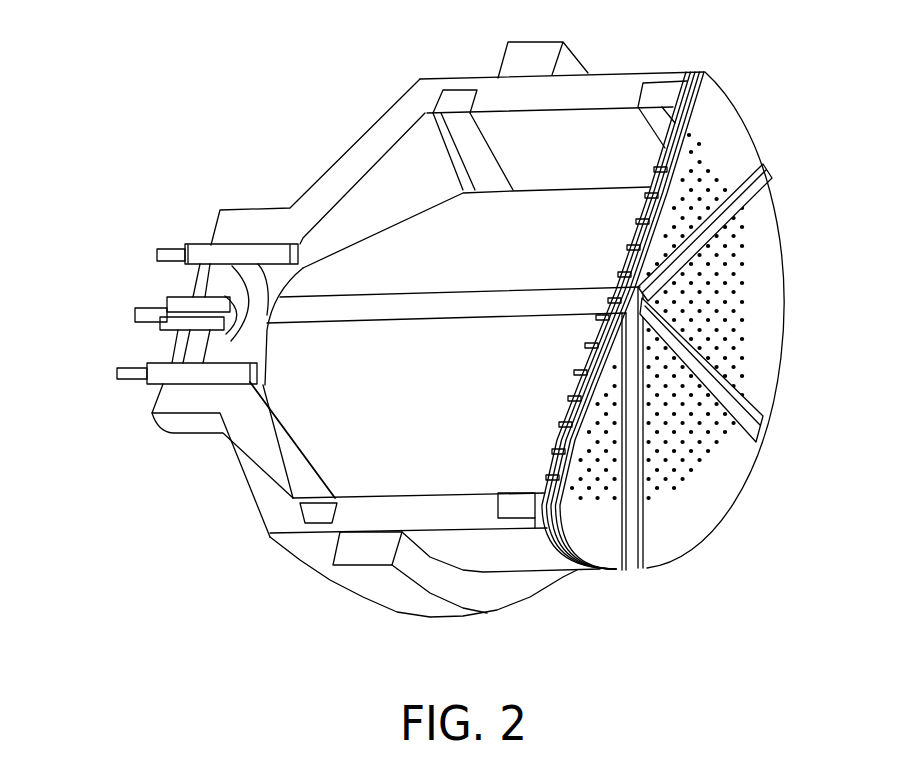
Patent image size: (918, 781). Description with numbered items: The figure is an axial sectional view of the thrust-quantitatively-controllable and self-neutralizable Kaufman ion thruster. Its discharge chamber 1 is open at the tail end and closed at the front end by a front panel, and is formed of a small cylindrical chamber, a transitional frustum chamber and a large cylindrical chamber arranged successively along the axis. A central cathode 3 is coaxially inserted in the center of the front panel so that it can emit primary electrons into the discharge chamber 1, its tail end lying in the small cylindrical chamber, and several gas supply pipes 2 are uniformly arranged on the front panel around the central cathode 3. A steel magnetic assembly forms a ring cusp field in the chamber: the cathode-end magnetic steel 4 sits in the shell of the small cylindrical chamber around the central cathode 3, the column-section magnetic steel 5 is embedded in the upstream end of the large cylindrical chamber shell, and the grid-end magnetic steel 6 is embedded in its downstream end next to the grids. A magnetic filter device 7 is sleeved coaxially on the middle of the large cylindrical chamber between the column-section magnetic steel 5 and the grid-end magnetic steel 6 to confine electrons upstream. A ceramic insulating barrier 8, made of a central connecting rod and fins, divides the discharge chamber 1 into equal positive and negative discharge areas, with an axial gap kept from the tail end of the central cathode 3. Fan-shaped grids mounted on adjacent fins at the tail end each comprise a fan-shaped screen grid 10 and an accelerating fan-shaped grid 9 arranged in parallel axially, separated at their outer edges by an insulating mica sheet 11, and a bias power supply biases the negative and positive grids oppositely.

The discharge chamber 1 is at (387, 130).
The gas supply pipes 2 is at (202, 253).
The central cathode 3 is at (177, 315).
The cathode-end magnetic steel 4 is at (255, 350).
The column-section magnetic steel 5 is at (320, 512).
The grid-end magnetic steel 6 is at (525, 508).
The magnetic filter device 7 is at (368, 555).
The insulating barrier 8 is at (750, 422).
The accelerating fan-shaped grid 9 is at (763, 337).
The fan-shaped screen grid 10 is at (665, 107).
The insulating mica sheet 11 is at (687, 79).